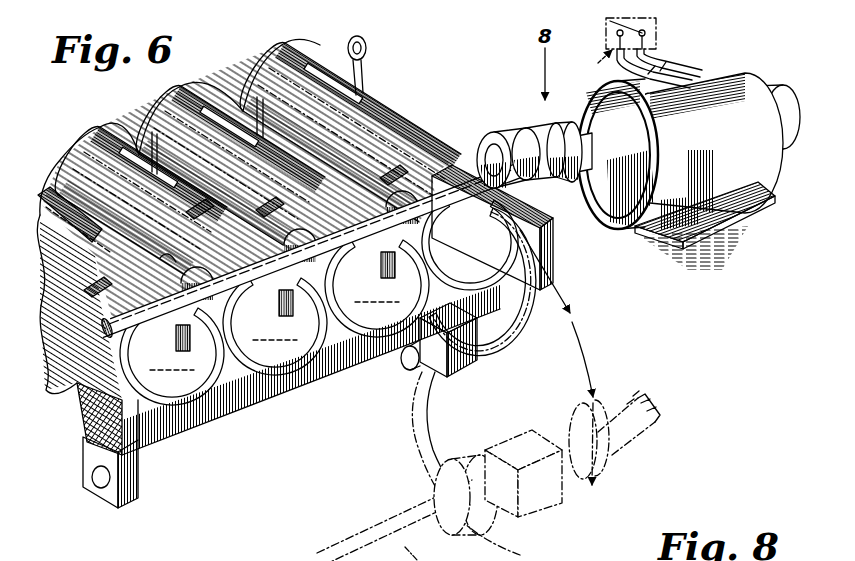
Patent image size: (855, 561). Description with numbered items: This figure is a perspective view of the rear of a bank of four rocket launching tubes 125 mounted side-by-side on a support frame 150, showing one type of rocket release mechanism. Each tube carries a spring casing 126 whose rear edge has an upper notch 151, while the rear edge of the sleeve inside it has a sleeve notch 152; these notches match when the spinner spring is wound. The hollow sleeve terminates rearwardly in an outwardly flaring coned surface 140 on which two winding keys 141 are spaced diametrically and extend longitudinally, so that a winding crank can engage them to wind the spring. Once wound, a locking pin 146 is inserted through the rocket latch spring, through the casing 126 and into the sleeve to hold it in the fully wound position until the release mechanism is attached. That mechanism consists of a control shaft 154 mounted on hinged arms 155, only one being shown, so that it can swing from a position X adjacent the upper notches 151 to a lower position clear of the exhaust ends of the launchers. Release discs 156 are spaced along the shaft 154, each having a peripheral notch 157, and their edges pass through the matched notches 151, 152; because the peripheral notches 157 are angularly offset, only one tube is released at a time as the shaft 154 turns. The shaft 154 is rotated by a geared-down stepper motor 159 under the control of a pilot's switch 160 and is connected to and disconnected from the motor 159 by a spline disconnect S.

The launching tube 125 is at (96, 145).
The spring casing 126 is at (200, 208).
The coned surface 140 is at (217, 404).
The winding keys 141 is at (316, 318).
The locking pin 146 is at (367, 47).
The support frame 150 is at (84, 468).
The upper notch 151 is at (175, 278).
The sleeve notch 152 is at (174, 305).
The control shaft 154 is at (78, 418).
The hinged arms 155 is at (517, 312).
The release discs 156 is at (208, 270).
The peripheral notch 157 is at (178, 338).
The stepper motor 159 is at (715, 78).
The pilot's switch 160 is at (657, 27).
The spline disconnect S is at (538, 127).
The position X is at (368, 185).